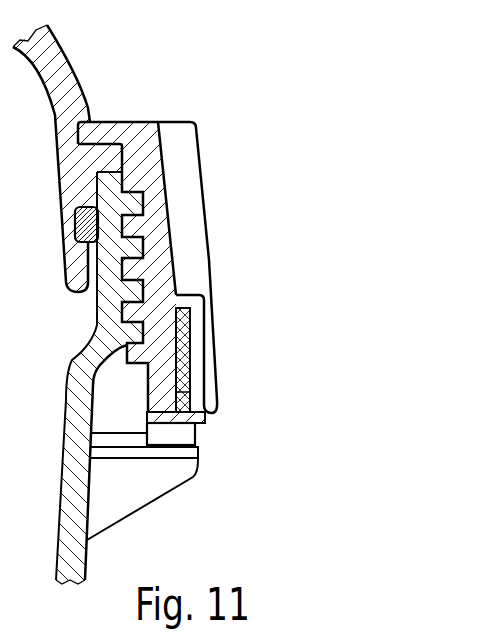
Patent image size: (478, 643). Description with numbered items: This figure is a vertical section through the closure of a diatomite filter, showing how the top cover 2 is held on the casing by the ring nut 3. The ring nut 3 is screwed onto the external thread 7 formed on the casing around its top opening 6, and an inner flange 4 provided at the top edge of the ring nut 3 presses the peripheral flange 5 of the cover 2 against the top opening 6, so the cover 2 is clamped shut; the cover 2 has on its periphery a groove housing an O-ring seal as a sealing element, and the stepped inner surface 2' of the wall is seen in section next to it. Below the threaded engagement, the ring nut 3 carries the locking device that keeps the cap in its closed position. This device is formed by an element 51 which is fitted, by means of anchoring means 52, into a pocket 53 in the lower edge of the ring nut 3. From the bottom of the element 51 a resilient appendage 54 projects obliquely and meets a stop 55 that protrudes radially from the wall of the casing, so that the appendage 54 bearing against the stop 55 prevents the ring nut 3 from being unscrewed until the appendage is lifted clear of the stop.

The top cover 2 is at (78, 303).
The stepped inner surface of wall 2' is at (175, 280).
The ring nut 3 is at (178, 121).
The inner flange 4 is at (92, 132).
The peripheral flange 5 is at (130, 140).
The top opening 6 is at (135, 165).
The external thread 7 is at (100, 246).
The element 51 is at (177, 402).
The anchoring means 52 is at (202, 312).
The pocket 53 is at (195, 355).
The resilient appendage 54 is at (177, 432).
The stop 55 is at (122, 442).